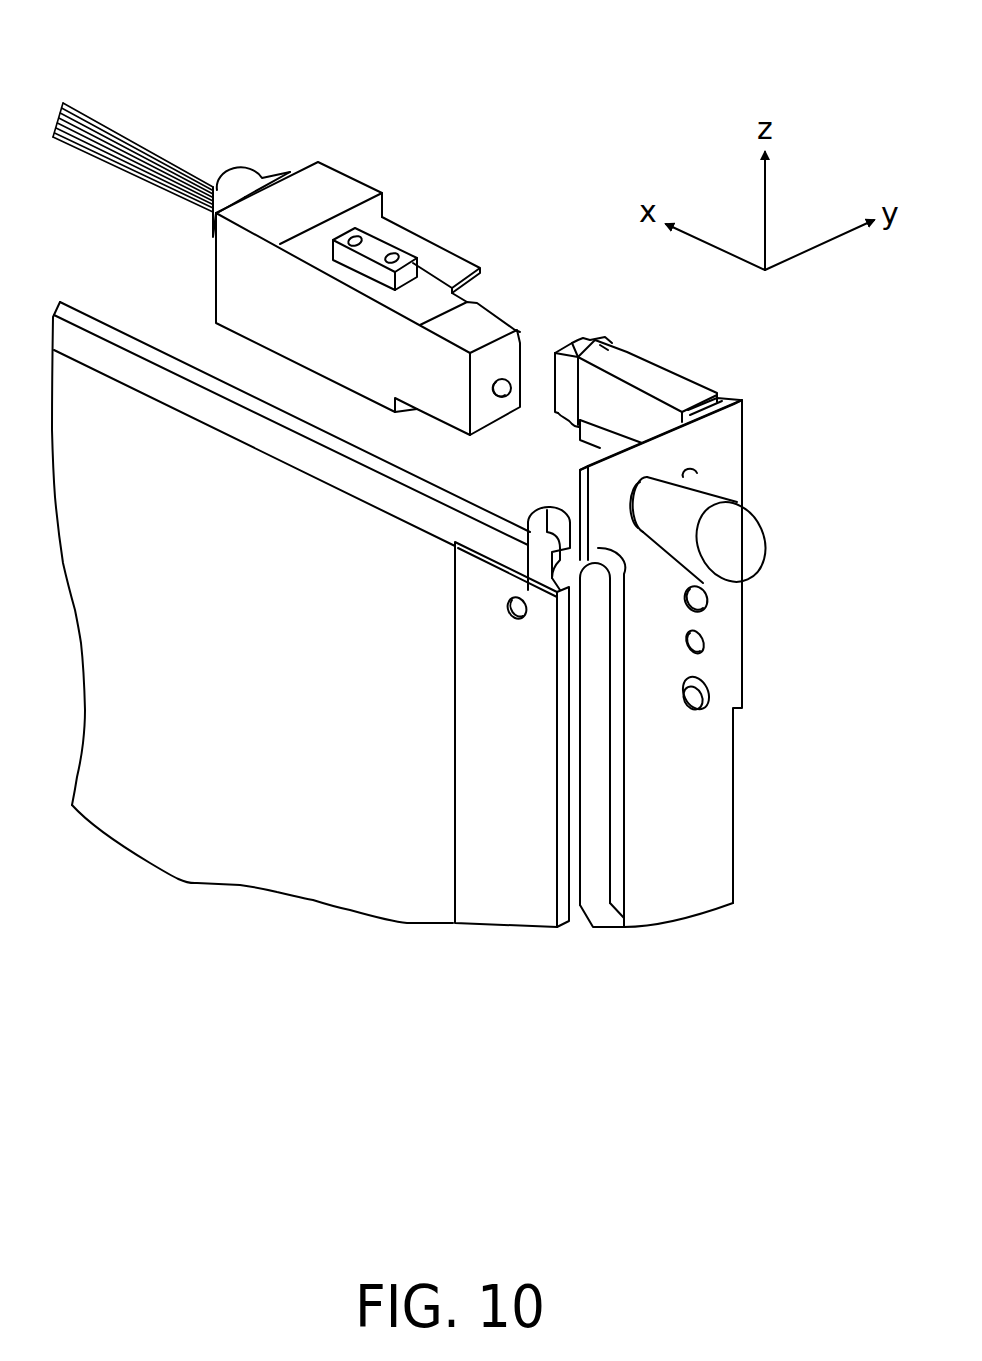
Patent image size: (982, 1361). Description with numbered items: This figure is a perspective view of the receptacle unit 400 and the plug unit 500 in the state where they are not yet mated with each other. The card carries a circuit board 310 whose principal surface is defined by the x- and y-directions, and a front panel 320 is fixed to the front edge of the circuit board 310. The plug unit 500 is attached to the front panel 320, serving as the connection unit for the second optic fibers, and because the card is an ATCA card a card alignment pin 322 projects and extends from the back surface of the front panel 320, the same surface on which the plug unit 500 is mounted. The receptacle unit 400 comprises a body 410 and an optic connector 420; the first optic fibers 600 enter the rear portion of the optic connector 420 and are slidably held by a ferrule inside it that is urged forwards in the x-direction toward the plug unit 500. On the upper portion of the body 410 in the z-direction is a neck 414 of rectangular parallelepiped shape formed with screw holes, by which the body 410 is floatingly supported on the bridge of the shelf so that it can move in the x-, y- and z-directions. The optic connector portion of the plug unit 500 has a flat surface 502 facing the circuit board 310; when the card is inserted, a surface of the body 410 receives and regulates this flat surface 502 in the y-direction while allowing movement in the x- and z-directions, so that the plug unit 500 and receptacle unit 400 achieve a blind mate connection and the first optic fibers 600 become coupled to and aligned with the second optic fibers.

The circuit board 310 is at (320, 877).
The front panel 320 is at (712, 812).
The card alignment pin 322 is at (580, 432).
The receptacle unit 400 is at (373, 112).
The body 410 is at (227, 290).
The neck 414 is at (385, 240).
The optic connector 420 is at (433, 252).
The plug unit 500 is at (658, 378).
The flat surface 502 is at (617, 395).
The first optic fibers 600 is at (119, 138).